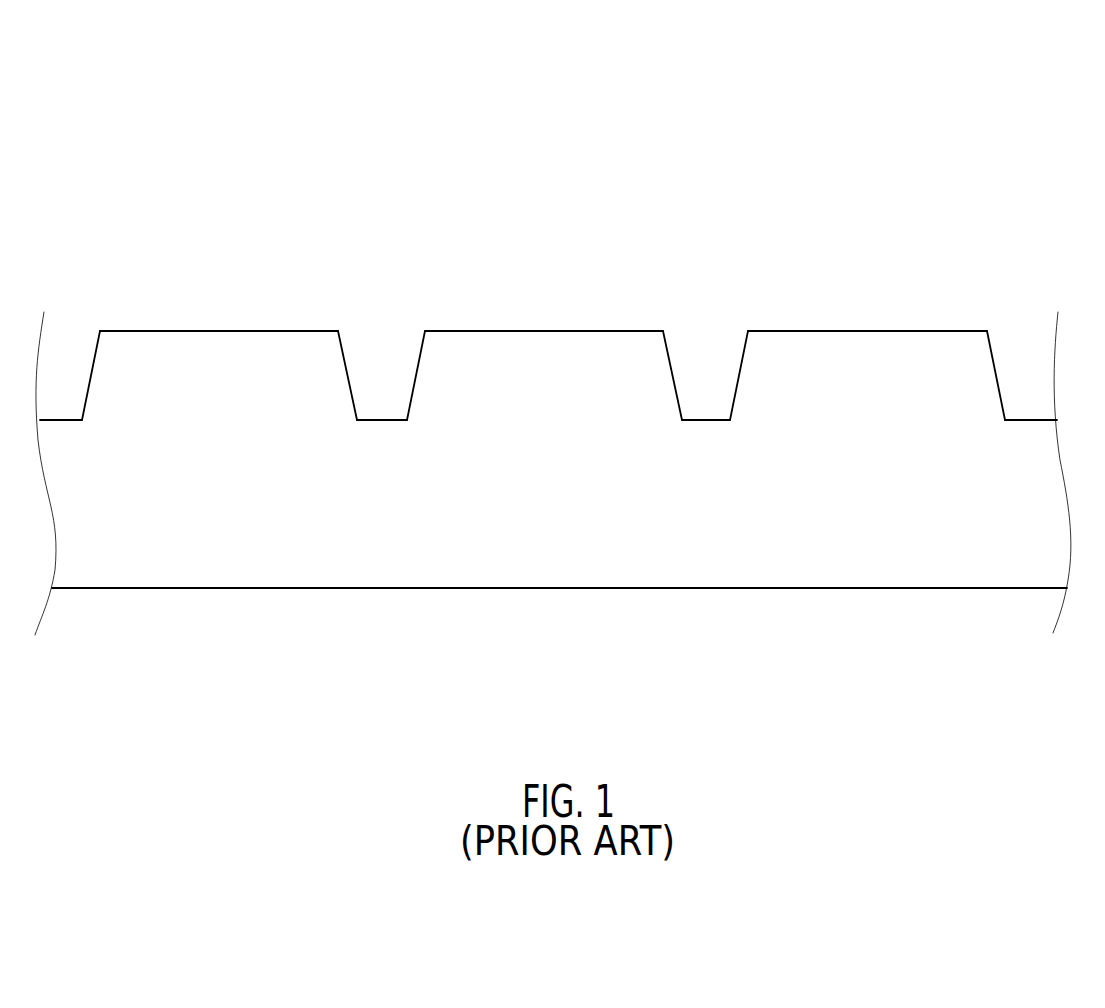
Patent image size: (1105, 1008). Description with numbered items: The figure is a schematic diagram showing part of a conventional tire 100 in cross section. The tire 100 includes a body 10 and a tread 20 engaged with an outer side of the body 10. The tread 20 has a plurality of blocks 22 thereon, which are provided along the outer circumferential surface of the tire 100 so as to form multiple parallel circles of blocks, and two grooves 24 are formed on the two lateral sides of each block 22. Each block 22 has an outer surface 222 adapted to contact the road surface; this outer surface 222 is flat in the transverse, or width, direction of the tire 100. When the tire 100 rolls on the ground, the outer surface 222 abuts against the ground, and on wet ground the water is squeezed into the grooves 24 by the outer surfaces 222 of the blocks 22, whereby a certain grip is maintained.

The conventional tire 100 is at (1100, 90).
The tread 20 is at (967, 320).
The block 22 is at (157, 366).
The outer surface 222 is at (287, 331).
The groove 24 is at (375, 375).
The body 10 is at (875, 537).